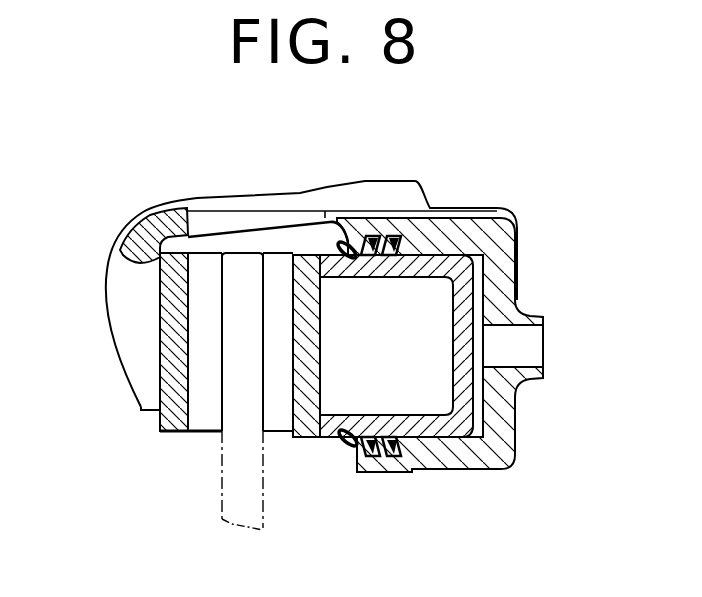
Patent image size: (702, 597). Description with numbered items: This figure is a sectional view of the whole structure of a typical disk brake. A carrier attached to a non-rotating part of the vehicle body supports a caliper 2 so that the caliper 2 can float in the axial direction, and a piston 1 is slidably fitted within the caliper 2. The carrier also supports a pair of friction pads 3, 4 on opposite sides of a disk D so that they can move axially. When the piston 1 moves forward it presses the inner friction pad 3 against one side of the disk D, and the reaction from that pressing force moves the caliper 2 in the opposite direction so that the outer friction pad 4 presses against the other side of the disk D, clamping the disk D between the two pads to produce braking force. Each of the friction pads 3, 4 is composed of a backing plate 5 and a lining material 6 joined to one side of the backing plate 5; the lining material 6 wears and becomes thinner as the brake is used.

The piston 1 is at (456, 263).
The caliper 2 is at (325, 186).
The friction pad (inner pad) 3 is at (319, 365).
The friction pad (outer pad) 4 is at (163, 330).
The backing plate 5 is at (172, 424).
The lining material 6 is at (202, 405).
The disk D is at (233, 262).